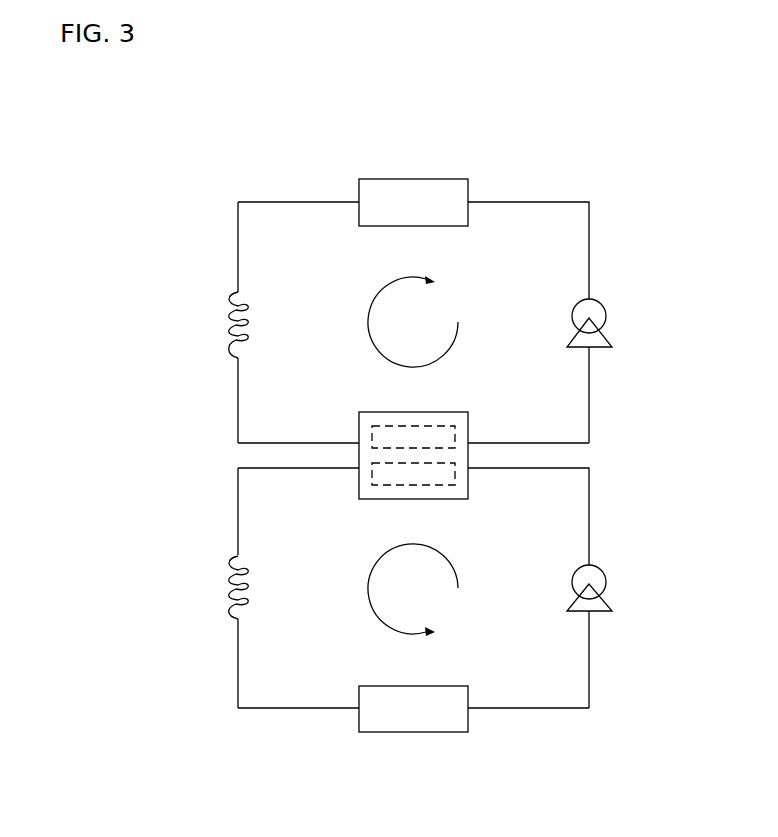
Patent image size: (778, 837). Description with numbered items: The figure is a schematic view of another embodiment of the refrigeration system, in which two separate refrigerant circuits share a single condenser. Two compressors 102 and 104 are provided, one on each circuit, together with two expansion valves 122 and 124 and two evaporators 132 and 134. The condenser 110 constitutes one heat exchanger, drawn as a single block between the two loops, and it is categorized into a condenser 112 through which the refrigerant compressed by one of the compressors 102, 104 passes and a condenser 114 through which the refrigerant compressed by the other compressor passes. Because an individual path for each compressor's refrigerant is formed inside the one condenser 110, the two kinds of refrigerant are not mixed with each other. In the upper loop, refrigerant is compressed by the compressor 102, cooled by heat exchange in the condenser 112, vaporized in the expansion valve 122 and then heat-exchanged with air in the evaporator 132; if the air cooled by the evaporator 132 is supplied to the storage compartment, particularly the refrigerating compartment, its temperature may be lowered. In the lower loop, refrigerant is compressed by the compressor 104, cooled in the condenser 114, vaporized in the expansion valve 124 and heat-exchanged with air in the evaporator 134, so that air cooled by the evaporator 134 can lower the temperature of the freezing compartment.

The compressor 102 is at (606, 316).
The compressor 104 is at (606, 582).
The condenser 110 is at (468, 457).
The condenser 112 is at (455, 428).
The condenser 114 is at (455, 481).
The expansion valve 122 is at (232, 321).
The expansion valve 124 is at (232, 585).
The evaporator 132 is at (413, 178).
The evaporator 134 is at (413, 733).